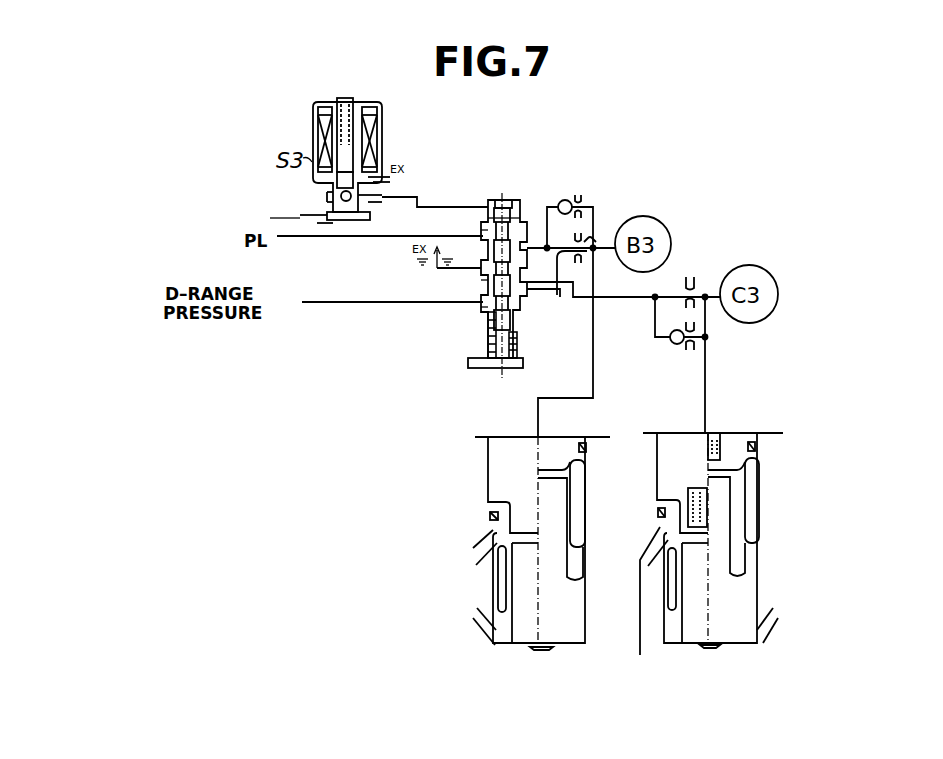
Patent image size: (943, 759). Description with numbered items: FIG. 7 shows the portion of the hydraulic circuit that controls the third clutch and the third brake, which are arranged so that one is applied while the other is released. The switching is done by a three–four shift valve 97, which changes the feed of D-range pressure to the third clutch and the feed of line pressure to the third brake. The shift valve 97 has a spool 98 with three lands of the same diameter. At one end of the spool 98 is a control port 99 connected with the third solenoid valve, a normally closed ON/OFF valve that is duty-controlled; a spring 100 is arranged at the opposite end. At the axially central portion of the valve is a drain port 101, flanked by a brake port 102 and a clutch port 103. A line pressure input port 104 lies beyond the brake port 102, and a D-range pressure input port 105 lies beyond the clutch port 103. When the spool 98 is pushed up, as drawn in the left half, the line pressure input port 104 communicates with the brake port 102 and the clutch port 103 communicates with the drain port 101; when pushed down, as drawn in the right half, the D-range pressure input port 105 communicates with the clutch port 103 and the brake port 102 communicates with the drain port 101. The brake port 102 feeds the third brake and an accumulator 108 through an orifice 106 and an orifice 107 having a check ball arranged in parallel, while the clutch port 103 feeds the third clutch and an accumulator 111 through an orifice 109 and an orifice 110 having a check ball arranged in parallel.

The 3–4 shift valve 97 is at (528, 167).
The spool 98 is at (520, 360).
The control port 99 is at (500, 200).
The spring 100 is at (497, 368).
The drain port 101 is at (477, 280).
The brake port 102 is at (533, 213).
The clutch port 103 is at (507, 317).
The line pressure input port 104 is at (480, 230).
The D-range pressure input port 105 is at (480, 307).
The orifice 106 is at (558, 280).
The orifice having a check ball 107 is at (583, 200).
The accumulator 108 is at (488, 491).
The orifice 109 is at (690, 296).
The orifice having a check ball 110 is at (682, 344).
The accumulator 111 is at (760, 502).